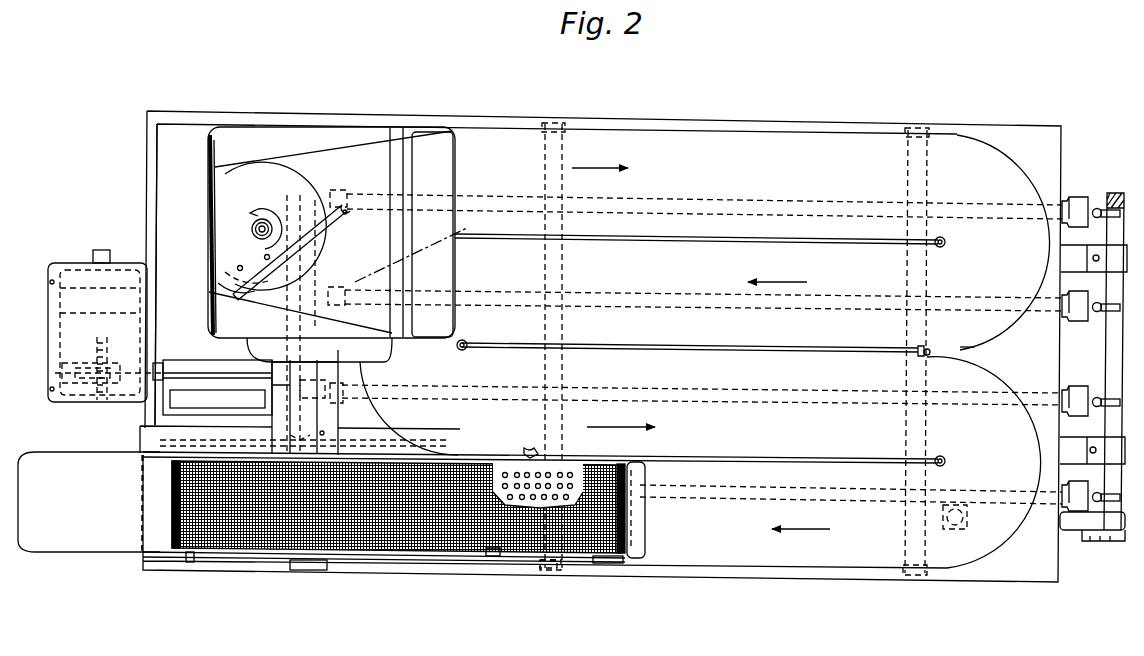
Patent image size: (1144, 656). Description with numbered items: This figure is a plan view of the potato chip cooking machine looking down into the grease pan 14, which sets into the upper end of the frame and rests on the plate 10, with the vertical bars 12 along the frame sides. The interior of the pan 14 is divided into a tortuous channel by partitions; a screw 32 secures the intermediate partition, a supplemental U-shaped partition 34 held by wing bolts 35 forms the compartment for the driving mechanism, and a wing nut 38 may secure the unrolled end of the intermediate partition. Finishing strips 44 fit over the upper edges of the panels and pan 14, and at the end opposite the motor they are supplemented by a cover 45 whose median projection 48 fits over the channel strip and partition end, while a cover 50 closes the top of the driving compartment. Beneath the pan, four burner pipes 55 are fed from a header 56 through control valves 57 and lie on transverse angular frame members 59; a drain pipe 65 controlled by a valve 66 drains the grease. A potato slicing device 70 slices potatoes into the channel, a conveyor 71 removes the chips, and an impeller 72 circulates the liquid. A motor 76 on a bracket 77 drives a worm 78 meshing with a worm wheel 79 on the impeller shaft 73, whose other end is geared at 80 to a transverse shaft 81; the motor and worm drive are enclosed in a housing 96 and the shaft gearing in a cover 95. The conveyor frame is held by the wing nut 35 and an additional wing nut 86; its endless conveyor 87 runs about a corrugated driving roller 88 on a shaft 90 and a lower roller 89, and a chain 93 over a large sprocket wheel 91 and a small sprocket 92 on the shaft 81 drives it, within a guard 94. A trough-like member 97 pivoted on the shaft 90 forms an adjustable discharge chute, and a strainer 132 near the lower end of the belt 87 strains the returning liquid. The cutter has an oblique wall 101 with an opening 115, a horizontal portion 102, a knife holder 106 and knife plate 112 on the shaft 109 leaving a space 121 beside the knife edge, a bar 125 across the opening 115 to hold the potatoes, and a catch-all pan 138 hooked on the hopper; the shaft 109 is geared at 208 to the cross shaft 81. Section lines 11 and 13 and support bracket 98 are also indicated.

The plate 10 is at (940, 152).
The section line 11- 11 is at (790, 148).
The vertical bars 12 is at (327, 135).
The section line 13- 13 is at (455, 232).
The grease pan 14 is at (745, 321).
The screw 32 is at (944, 243).
The supplemental U-shaped partition 34 is at (276, 440).
The wing bolts 35 is at (530, 452).
The wing nut 38 is at (928, 362).
The finishing strips 44 is at (670, 123).
The cover 45 is at (1062, 152).
The median projection 48 is at (968, 350).
The cover 50 is at (392, 432).
The burners 55 is at (694, 200).
The header 56 is at (1110, 338).
The control valves 57 is at (1088, 199).
The transverse angular frame members 59 is at (548, 161).
The drain pipe 65 is at (1073, 522).
The valve 66 is at (1100, 541).
The potato slicing device 70 is at (233, 128).
The conveyor 71 is at (450, 546).
The impeller 72 is at (163, 397).
The impeller shaft 73 is at (122, 392).
The motor 76 is at (58, 296).
The bracket 77 is at (50, 278).
The worm 78 is at (98, 352).
The worm wheel 79 is at (85, 404).
The gearing 80 is at (295, 398).
The transverse shaft 81 is at (295, 322).
The wing nut 86 is at (533, 557).
The endless conveyor 87 is at (403, 542).
The driving roller 88 is at (193, 553).
The roller 89 is at (612, 563).
The shaft 90 is at (187, 563).
The sprocket wheel 91 is at (143, 437).
The sprocket 92 is at (336, 448).
The chain 93 is at (206, 440).
The guard 94 is at (322, 437).
The cover 95 is at (352, 372).
The housing 96 is at (56, 352).
The trough-like member 97 is at (48, 483).
The support bracket 98 is at (187, 556).
The wall 101 is at (399, 173).
The horizontal portion 102 is at (168, 208).
The knife holder 106 is at (258, 238).
The shaft 109 is at (297, 209).
The knife plate 112 is at (238, 207).
The opening 115 is at (311, 181).
The space 121 is at (222, 288).
The bar 125 is at (272, 300).
The strainer 132 is at (640, 548).
The catch-all pan 138 is at (435, 140).
The gearing 208 is at (342, 256).